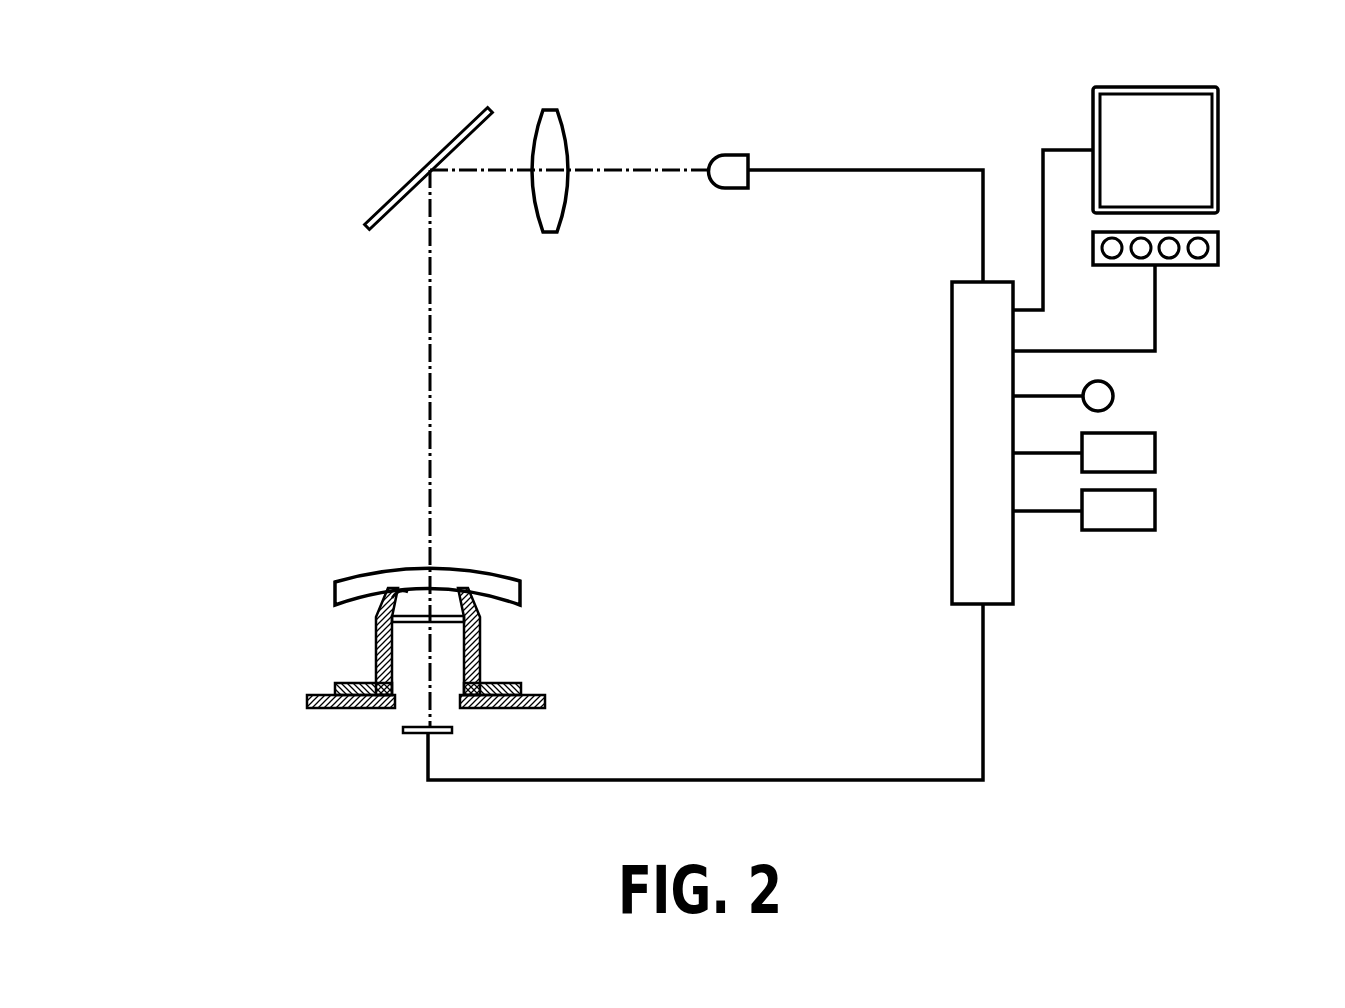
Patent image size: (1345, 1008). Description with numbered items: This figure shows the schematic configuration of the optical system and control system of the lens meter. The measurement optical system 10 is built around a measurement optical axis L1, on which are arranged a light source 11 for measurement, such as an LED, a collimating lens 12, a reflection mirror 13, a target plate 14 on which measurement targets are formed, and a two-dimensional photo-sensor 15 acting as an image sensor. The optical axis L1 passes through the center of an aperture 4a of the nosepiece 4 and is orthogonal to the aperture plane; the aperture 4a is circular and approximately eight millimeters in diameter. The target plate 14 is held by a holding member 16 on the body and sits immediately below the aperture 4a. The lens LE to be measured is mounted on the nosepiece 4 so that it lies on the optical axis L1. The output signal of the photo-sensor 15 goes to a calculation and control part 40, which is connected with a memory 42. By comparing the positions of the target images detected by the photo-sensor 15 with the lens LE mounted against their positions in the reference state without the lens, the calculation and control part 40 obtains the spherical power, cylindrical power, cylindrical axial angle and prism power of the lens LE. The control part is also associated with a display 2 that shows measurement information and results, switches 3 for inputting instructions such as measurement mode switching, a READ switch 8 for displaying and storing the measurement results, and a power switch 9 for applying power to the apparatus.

The measurement optical system 10 is at (212, 361).
The light source 11 is at (731, 157).
The collimating lens 12 is at (552, 110).
The reflection mirror 13 is at (466, 121).
The measurement optical axis L1 is at (430, 425).
The lens LE is at (485, 570).
The nosepiece 4 is at (480, 630).
The aperture 4a is at (385, 602).
The target plate 14 is at (476, 648).
The holding member 16 is at (402, 700).
The two-dimensional photo-sensor 15 is at (405, 737).
The calculation and control part 40 is at (952, 338).
The display 2 is at (1218, 140).
The switches 3 is at (1218, 245).
The READ switch 8 is at (1113, 395).
The memory 42 is at (1155, 453).
The power switch 9 is at (1155, 511).